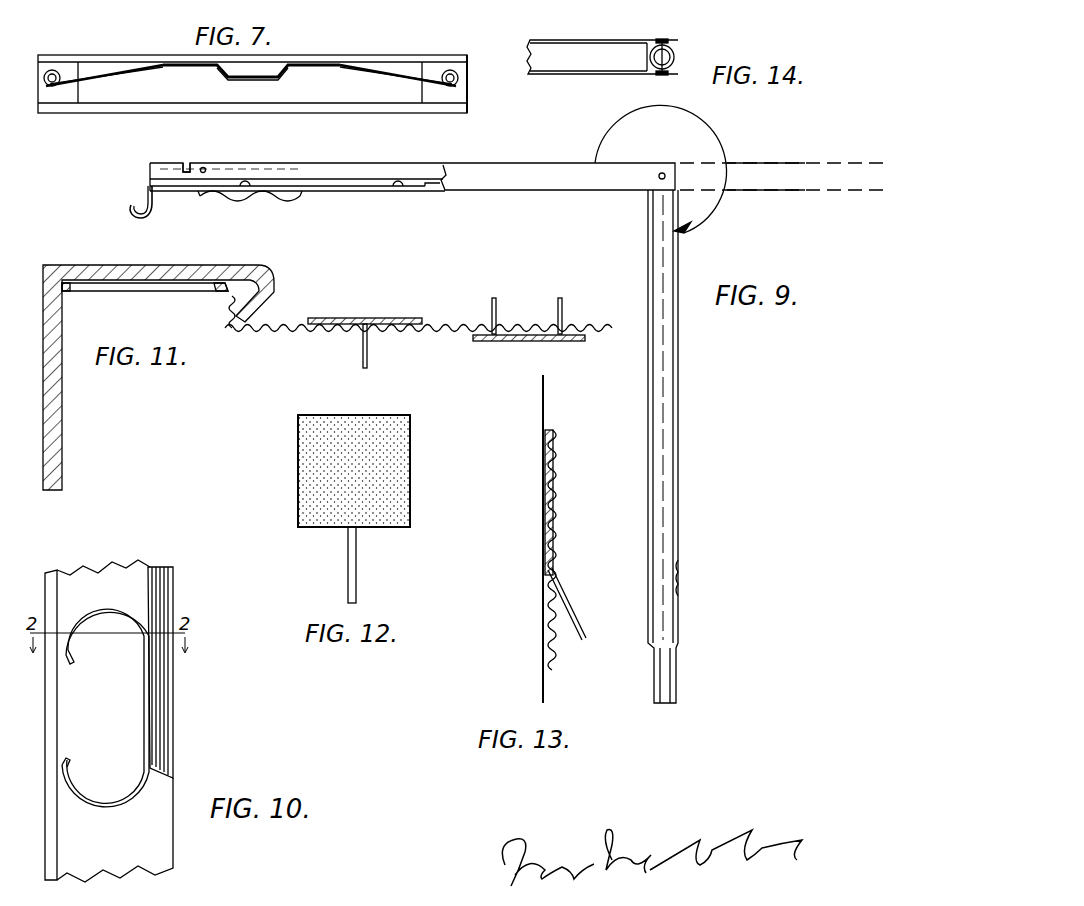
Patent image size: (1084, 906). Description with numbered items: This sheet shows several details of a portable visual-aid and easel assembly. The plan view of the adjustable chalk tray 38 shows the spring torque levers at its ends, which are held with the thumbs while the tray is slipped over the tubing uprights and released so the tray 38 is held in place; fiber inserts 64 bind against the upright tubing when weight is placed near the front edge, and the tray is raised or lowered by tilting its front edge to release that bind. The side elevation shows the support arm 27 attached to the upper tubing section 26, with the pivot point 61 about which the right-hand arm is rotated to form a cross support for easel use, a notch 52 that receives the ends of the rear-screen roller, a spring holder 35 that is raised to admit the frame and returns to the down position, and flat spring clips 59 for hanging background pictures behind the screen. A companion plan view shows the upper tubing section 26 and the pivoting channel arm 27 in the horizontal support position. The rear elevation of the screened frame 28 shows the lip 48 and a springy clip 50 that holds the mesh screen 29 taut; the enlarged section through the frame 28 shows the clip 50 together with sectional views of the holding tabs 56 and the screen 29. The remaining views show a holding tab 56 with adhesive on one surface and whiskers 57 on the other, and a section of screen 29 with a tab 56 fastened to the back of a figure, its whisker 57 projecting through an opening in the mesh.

In FIG. 14, the tubing section 26 is at (684, 60).
In FIG. 9, the tubing section 26 is at (690, 427).
In FIG. 14, the support arm 27 is at (608, 41).
In FIG. 9, the support arm 27 is at (536, 161).
In FIG. 11, the folding frame 28 is at (66, 448).
In FIG. 10, the folding frame 28 is at (105, 560).
In FIG. 11, the screen 29 is at (454, 322).
In FIG. 13, the screen 29 is at (568, 512).
In FIG. 9, the spring holder 35 is at (119, 204).
In FIG. 7, the tray 38 is at (251, 84).
In FIG. 10, the lip 48 is at (176, 597).
In FIG. 11, the springy clip 50 is at (166, 300).
In FIG. 10, the springy clip 50 is at (120, 816).
In FIG. 9, the notch 52 is at (196, 161).
In FIG. 12, the tab 56 is at (410, 483).
In FIG. 13, the tab 56 is at (548, 430).
In FIG. 12, the whisker 57 is at (358, 581).
In FIG. 13, the whisker 57 is at (586, 620).
In FIG. 9, the flat spring clip 59 is at (247, 206).
In FIG. 9, the pivot point 61 is at (660, 169).
In FIG. 7, the fiber insert 64 is at (467, 93).